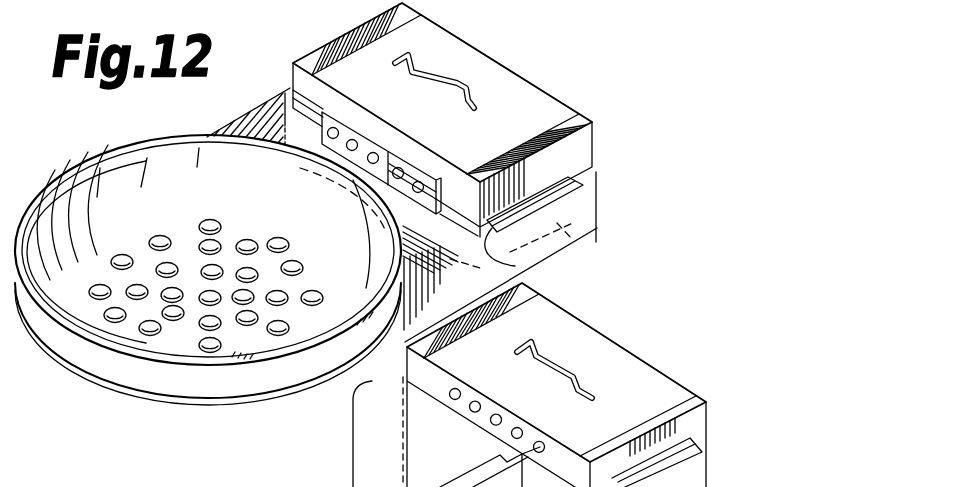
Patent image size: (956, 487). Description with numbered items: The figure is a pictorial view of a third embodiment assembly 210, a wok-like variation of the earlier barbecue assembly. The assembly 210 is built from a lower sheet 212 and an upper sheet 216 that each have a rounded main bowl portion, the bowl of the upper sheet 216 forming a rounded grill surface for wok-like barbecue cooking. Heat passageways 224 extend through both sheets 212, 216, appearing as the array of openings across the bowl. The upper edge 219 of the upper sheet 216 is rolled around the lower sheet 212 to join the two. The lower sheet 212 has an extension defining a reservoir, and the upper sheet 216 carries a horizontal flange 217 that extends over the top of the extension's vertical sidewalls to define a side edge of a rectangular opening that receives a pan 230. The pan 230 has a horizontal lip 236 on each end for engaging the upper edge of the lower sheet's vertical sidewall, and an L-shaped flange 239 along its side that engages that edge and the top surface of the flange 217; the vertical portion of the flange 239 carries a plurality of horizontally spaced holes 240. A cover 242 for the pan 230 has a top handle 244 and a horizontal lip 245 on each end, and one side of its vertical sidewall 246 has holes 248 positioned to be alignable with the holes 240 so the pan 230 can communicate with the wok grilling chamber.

The third embodiment assembly 210 is at (602, 134).
The lower sheet 212 is at (217, 407).
The upper sheet 216 is at (78, 303).
The horizontal flange 217 is at (250, 111).
The upper edge 219 is at (280, 360).
The heat passageways 224 is at (246, 241).
The pan 230 is at (597, 240).
The horizontal lip 236 is at (515, 266).
The L-shaped flange 239 is at (428, 152).
The holes 240 is at (390, 160).
The cover 242 is at (508, 80).
The top handle 244 is at (440, 66).
The horizontal lip 245 is at (600, 200).
The vertical sidewall 246 is at (306, 91).
The holes 248 is at (493, 420).